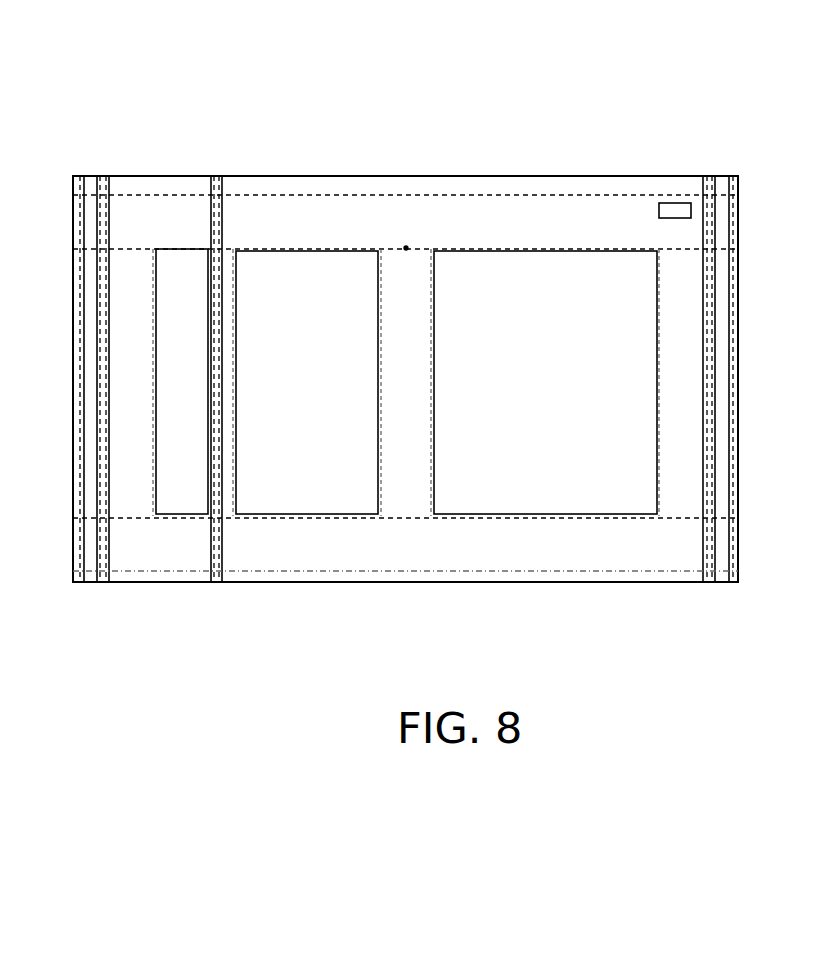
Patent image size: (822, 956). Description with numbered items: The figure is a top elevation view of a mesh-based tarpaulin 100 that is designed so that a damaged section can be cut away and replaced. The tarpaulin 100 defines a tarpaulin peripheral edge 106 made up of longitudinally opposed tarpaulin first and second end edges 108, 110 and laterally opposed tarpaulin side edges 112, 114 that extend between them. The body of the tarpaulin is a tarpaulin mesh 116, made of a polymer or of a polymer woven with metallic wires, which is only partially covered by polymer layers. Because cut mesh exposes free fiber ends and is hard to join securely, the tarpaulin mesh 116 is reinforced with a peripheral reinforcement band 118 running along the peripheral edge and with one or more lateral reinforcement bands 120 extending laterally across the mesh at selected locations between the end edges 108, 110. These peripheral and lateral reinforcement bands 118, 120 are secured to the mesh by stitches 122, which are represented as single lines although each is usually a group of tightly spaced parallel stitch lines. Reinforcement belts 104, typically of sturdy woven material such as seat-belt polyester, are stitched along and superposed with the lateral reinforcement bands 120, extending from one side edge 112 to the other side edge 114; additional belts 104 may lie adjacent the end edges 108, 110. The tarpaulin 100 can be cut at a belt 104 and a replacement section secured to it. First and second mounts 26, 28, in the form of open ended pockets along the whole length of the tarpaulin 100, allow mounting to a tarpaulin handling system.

The tarpaulin 100 is at (247, 68).
The reinforcement belt 104 is at (81, 177).
The tarpaulin peripheral edge 106 is at (683, 176).
The tarpaulin first end edge 108 is at (740, 386).
The tarpaulin second end edge 110 is at (72, 376).
The tarpaulin side edge 112 is at (357, 175).
The tarpaulin side edge 114 is at (385, 582).
The tarpaulin mesh 116 is at (550, 379).
The peripheral reinforcement band 118 is at (323, 559).
The lateral reinforcement band 120 is at (412, 469).
The stitches 122 is at (494, 196).
The first mount 26 is at (285, 183).
The second mount 28 is at (585, 574).